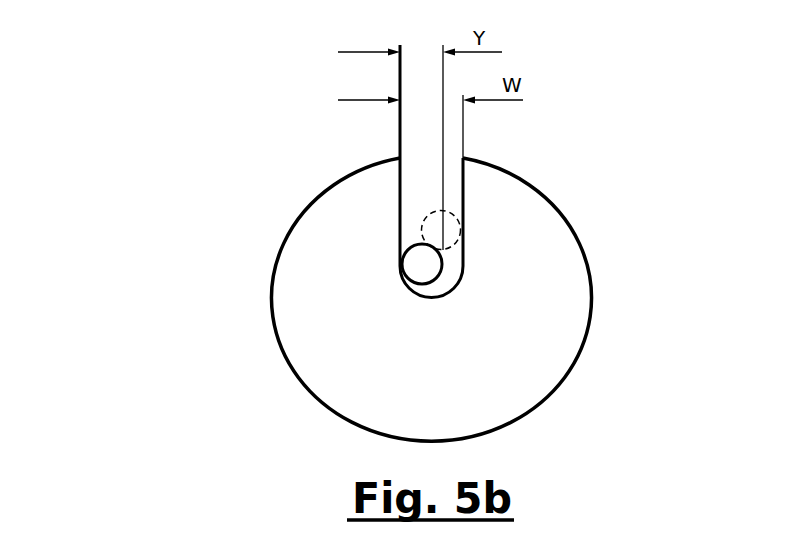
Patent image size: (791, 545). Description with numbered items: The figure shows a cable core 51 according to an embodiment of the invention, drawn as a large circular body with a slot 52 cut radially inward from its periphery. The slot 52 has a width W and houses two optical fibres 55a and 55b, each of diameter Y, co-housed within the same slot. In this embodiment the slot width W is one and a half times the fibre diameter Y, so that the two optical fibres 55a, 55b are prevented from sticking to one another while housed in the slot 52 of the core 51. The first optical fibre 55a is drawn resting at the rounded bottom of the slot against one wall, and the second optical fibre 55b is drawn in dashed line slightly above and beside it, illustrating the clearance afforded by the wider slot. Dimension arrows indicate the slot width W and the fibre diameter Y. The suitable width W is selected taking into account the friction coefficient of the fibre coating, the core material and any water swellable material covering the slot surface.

The core 51 is at (560, 297).
The slot 52 is at (417, 170).
The optical fibre 55a is at (417, 270).
The optical fibre 55b is at (453, 228).